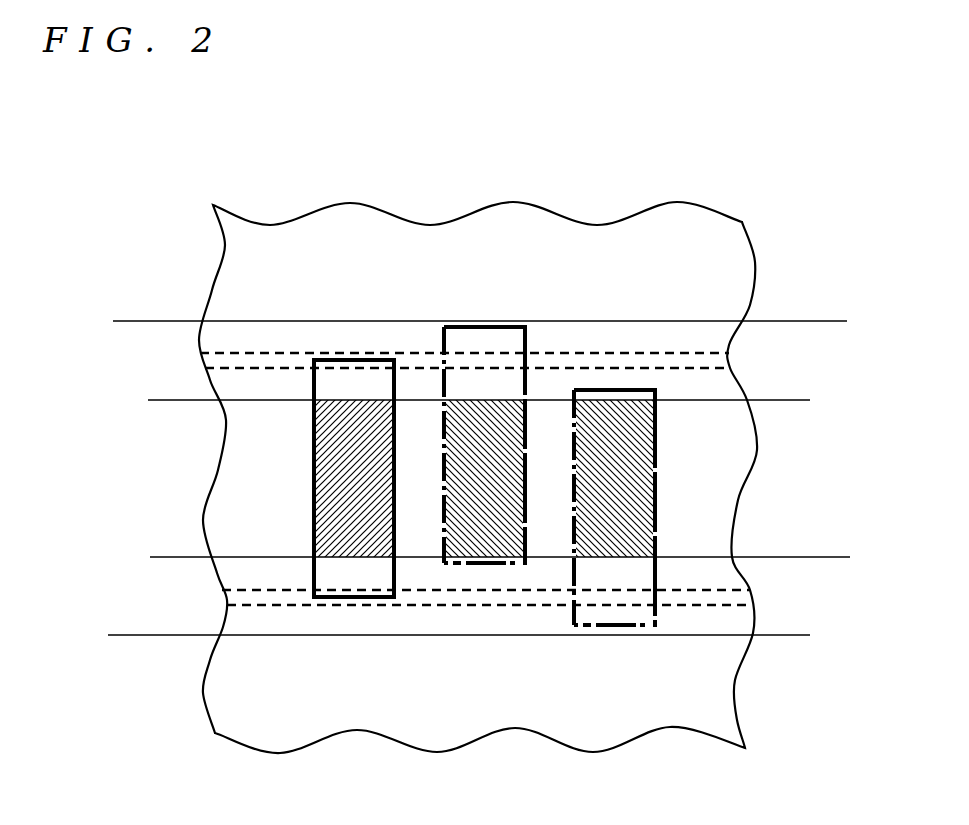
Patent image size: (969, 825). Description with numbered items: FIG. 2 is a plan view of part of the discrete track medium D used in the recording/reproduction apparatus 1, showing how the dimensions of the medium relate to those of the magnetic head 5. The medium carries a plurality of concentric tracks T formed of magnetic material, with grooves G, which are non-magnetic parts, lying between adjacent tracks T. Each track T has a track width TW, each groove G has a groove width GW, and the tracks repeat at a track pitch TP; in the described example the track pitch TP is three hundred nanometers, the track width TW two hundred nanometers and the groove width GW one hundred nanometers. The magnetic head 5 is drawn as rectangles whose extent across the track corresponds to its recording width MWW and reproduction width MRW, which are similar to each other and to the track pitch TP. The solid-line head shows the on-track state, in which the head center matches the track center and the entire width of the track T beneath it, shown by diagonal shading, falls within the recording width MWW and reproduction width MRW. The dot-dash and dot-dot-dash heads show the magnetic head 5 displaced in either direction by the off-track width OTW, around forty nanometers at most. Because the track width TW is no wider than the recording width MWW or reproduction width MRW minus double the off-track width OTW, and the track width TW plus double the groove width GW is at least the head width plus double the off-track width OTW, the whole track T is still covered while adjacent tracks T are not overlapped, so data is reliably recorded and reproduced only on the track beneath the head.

The recording/reproduction apparatus 1 is at (491, 138).
The discrete track medium D is at (412, 180).
The track T is at (703, 233).
The groove G is at (699, 333).
The magnetic head 5 is at (356, 359).
The off-track width OTW is at (200, 355).
The recording width MWW is at (314, 597).
The reproduction width MRW is at (273, 491).
The groove width GW is at (794, 321).
The track width TW is at (796, 400).
The track pitch TP is at (837, 321).